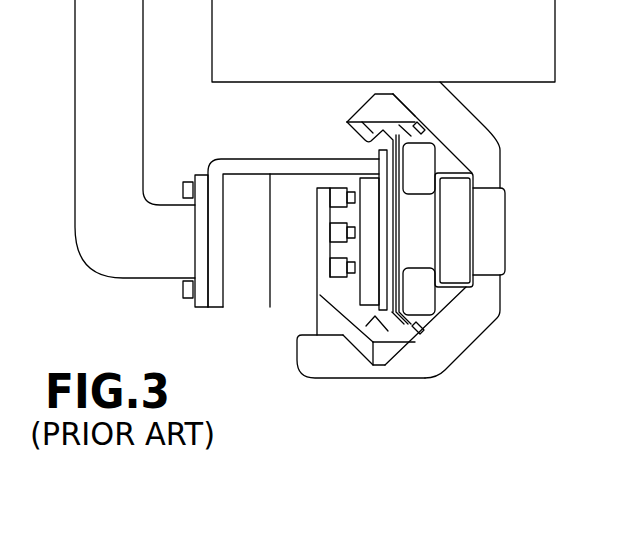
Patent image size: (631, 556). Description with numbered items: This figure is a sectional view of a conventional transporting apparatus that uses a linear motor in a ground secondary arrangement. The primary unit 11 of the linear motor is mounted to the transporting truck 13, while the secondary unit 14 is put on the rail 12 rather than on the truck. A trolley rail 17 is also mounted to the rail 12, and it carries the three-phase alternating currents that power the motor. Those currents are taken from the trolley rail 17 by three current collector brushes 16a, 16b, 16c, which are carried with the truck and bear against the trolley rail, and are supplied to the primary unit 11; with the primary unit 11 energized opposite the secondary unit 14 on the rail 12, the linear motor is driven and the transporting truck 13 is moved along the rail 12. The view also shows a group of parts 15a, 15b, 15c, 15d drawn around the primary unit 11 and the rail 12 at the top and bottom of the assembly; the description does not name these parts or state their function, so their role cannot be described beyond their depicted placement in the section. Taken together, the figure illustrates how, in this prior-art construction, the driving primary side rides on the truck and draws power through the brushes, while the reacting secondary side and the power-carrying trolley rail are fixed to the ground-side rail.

The primary unit 11 is at (413, 207).
The rail 12 is at (370, 136).
The transporting truck 13 is at (497, 304).
The secondary unit 14 is at (400, 228).
The upper left clamp plate 15a is at (364, 122).
The upper right clamp plate 15b is at (400, 125).
The lower left clamp plate 15c is at (343, 338).
The lower right clamp plate 15d is at (416, 340).
The current collector brush 16a is at (338, 188).
The current collector brush 16b is at (338, 223).
The current collector brush 16c is at (338, 258).
The trolley rail 17 is at (360, 281).